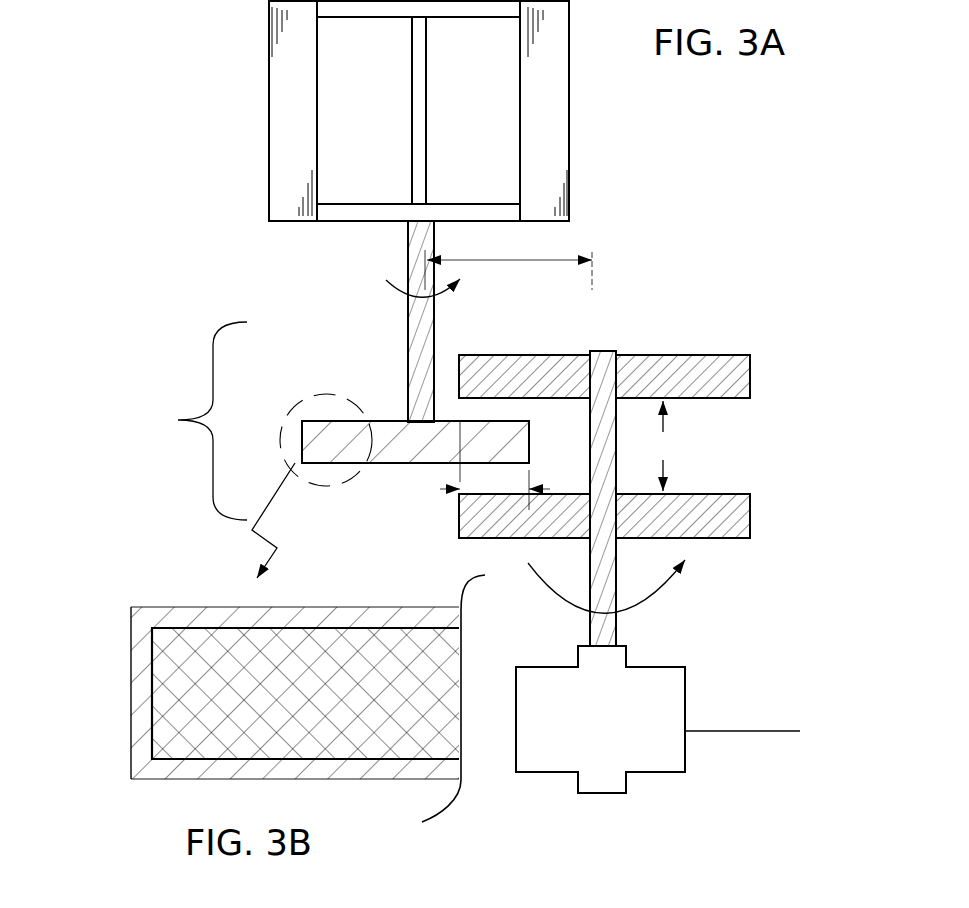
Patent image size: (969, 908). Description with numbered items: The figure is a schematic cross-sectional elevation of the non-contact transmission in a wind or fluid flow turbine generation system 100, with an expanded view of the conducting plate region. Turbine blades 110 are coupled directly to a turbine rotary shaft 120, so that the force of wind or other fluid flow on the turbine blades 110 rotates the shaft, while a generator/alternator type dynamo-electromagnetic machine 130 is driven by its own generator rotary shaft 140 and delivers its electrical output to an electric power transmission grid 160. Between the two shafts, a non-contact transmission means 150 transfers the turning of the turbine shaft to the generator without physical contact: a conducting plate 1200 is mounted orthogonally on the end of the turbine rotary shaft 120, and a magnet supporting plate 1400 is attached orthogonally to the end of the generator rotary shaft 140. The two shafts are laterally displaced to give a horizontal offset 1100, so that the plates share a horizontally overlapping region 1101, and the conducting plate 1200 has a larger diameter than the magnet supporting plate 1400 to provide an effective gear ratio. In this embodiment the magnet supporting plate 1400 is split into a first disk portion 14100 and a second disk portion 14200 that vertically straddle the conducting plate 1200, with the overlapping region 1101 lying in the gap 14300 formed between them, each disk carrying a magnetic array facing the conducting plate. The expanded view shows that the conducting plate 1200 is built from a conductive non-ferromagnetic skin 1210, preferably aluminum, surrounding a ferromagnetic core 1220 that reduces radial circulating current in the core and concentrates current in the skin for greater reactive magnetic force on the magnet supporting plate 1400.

In FIG. 3A, the wind or fluid flow turbine generation system 100 is at (176, 246).
In FIG. 3A, the turbine blades 110 is at (565, 60).
In FIG. 3A, the turbine rotary shaft 120 is at (408, 307).
In FIG. 3A, the conducting plate 1200 is at (387, 420).
In FIG. 3B, the conducting plate 1200 is at (178, 588).
In FIG. 3B, the conductive non-ferromagnetic skin 1210 is at (135, 740).
In FIG. 3B, the ferromagnetic core 1220 is at (312, 702).
In FIG. 3A, the dynamo-electromagnetic machine 130 is at (628, 727).
In FIG. 3A, the generator rotary shaft 140 is at (595, 555).
In FIG. 3A, the magnet supporting plate 1400 is at (670, 435).
In FIG. 3A, the first disk portion 14100 is at (707, 352).
In FIG. 3A, the second disk portion 14200 is at (752, 525).
In FIG. 3A, the gap 14300 is at (662, 446).
In FIG. 3A, the non-contact transmission means 150 is at (172, 421).
In FIG. 3A, the electric power transmission grid 160 is at (722, 735).
In FIG. 3A, the horizontal offset 1100 is at (508, 263).
In FIG. 3A, the horizontally overlapping region 1101 is at (495, 465).